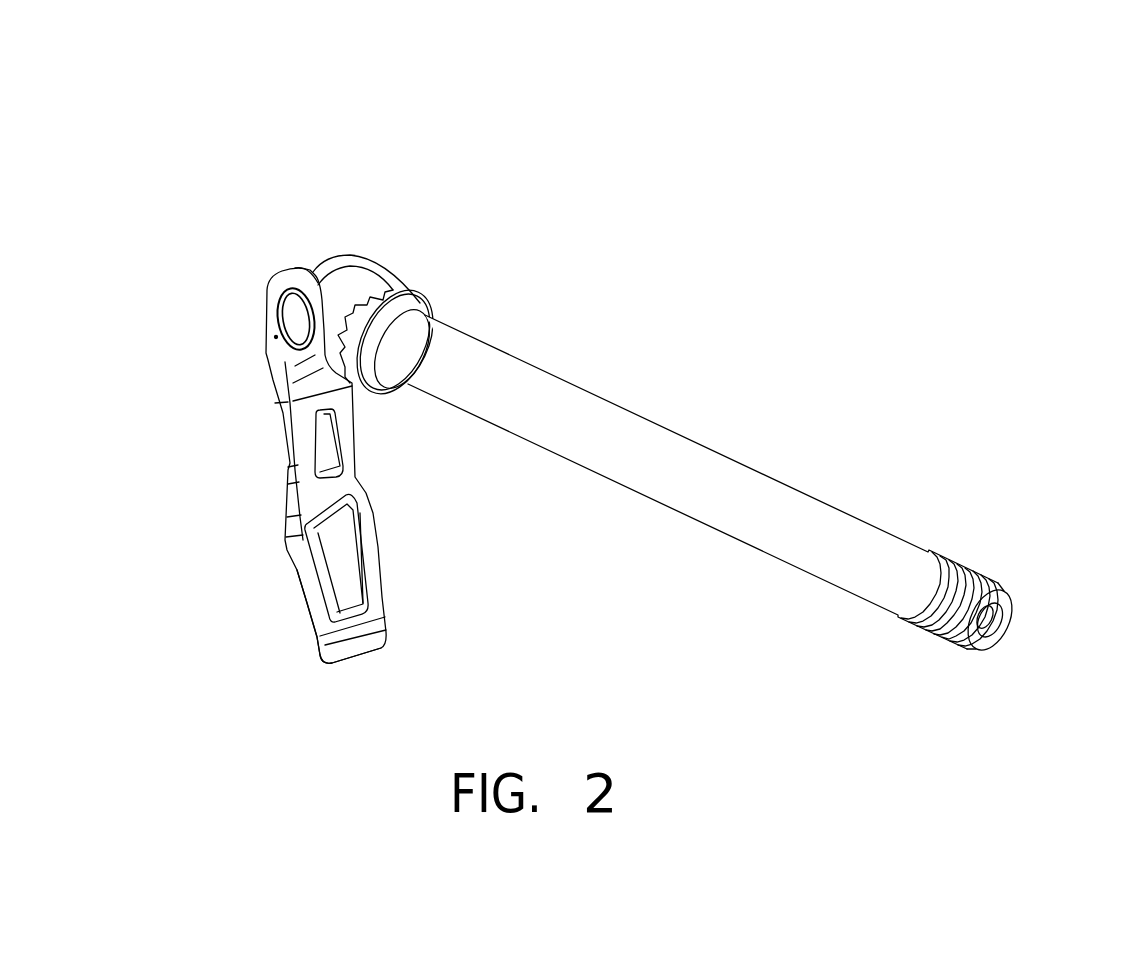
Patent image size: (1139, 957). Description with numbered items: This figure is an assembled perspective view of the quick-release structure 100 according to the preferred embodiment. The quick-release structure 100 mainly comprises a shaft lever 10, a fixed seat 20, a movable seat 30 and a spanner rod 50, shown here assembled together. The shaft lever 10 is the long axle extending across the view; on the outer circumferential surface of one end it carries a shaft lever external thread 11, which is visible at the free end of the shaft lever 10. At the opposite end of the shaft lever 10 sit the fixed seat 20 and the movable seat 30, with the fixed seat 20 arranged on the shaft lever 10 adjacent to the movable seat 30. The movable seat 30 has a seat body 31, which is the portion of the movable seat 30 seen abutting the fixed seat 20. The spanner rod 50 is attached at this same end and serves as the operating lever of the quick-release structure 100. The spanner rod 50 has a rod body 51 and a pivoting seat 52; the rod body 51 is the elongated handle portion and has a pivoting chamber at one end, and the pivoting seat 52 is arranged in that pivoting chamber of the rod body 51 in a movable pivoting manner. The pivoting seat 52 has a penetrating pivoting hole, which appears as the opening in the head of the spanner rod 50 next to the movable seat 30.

The quick-release structure 100 is at (1070, 178).
The shaft lever 10 is at (682, 456).
The shaft lever external thread 11 is at (938, 633).
The fixed seat 20 is at (428, 307).
The movable seat 30 is at (364, 82).
The seat body 31 is at (357, 283).
The spanner rod 50 is at (133, 412).
The rod body 51 is at (290, 542).
The pivoting seat 52 is at (287, 312).